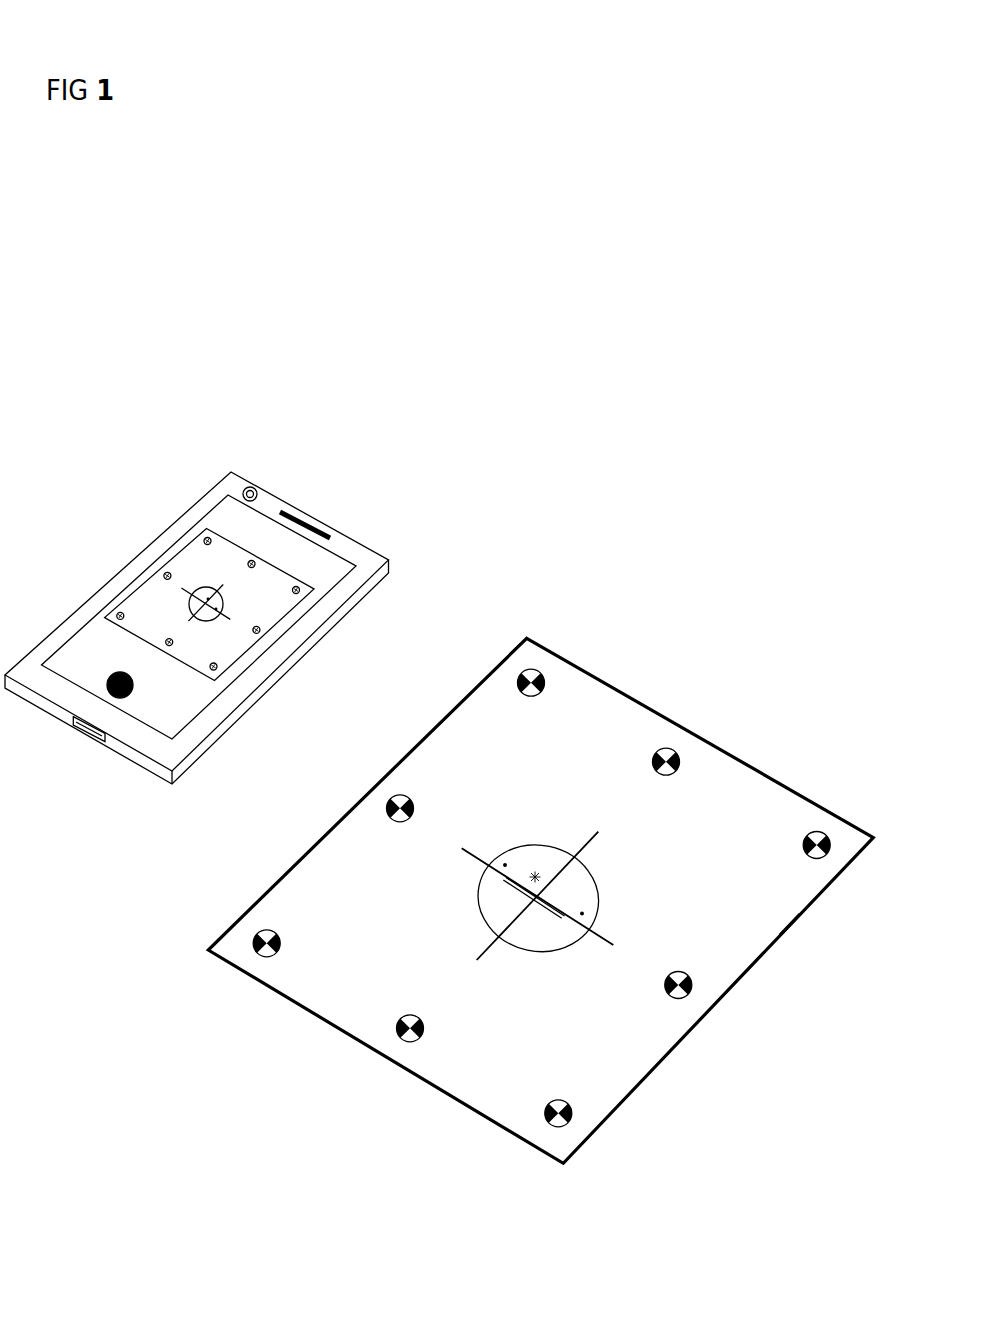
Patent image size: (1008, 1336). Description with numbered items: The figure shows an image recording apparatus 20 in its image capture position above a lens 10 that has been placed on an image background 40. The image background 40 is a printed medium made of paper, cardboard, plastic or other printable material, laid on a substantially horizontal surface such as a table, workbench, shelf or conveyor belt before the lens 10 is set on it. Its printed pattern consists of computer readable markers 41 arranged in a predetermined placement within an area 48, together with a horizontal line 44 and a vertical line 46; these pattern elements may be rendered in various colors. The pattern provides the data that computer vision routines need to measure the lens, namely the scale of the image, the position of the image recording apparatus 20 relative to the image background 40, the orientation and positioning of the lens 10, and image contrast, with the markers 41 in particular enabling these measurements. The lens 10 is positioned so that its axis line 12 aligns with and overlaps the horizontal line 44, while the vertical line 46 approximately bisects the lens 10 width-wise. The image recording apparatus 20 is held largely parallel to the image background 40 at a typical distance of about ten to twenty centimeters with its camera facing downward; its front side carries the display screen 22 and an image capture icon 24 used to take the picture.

The lens 10 is at (566, 871).
The axis line 12 is at (512, 888).
The image recording apparatus 20 is at (194, 497).
The display screen 22 is at (330, 565).
The image capture icon 24 is at (110, 680).
The image background 40 is at (470, 693).
The computer readable markers 41 is at (825, 830).
The horizontal line 44 is at (600, 935).
The vertical line 46 is at (503, 933).
The area 48 is at (772, 918).